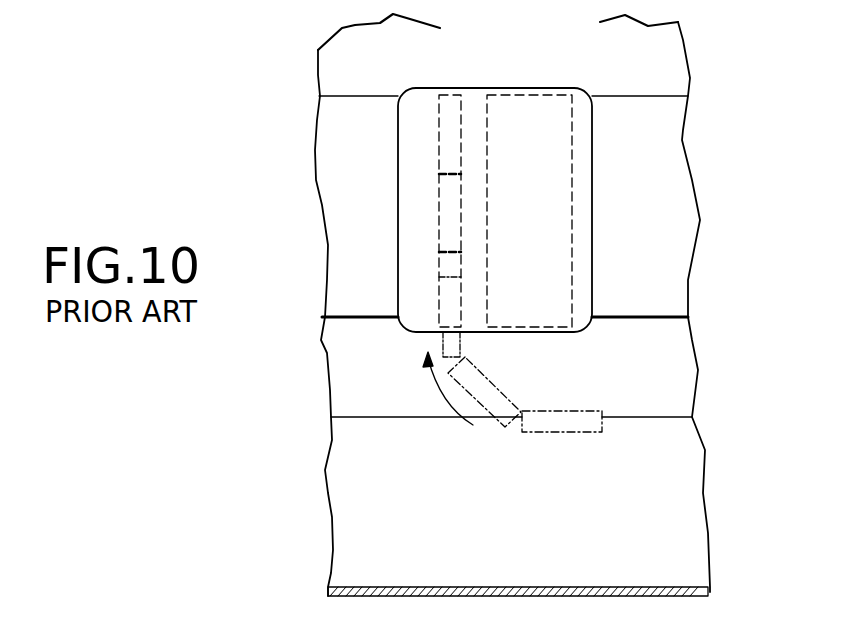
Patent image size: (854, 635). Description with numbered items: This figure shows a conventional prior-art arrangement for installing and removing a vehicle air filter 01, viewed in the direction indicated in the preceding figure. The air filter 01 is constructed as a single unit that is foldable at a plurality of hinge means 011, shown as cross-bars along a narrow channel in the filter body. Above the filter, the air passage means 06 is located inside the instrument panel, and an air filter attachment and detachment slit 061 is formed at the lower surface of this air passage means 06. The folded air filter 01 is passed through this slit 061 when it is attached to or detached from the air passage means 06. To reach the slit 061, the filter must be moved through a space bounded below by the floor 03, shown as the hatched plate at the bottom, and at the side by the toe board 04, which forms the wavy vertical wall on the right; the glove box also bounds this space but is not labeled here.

The air filter 01 is at (437, 213).
The hinge means 011 is at (461, 174).
The air filter attachment and detachment slit 061 is at (457, 335).
The air passage means 06 is at (635, 318).
The toe board 04 is at (683, 508).
The floor 03 is at (437, 587).